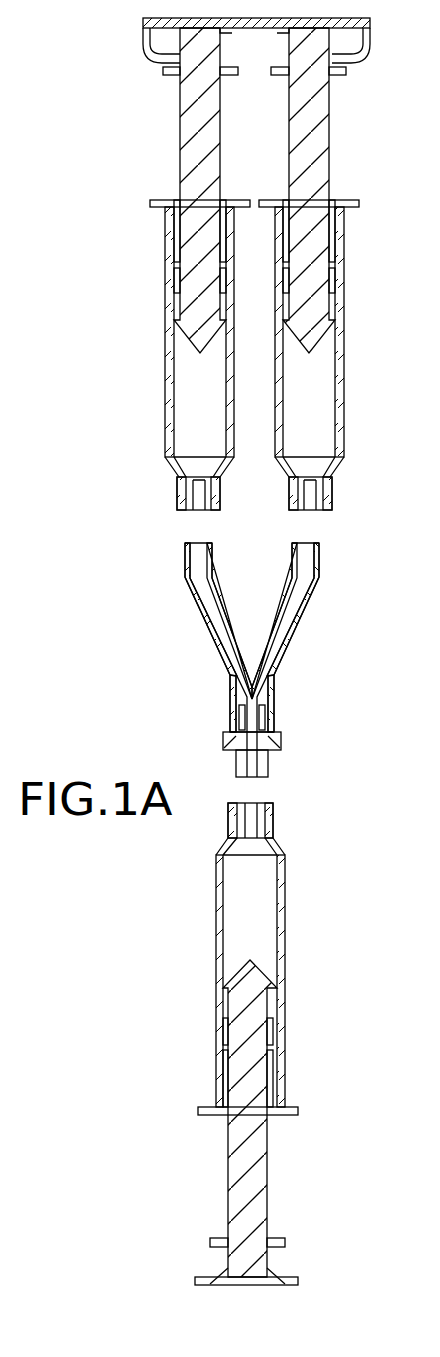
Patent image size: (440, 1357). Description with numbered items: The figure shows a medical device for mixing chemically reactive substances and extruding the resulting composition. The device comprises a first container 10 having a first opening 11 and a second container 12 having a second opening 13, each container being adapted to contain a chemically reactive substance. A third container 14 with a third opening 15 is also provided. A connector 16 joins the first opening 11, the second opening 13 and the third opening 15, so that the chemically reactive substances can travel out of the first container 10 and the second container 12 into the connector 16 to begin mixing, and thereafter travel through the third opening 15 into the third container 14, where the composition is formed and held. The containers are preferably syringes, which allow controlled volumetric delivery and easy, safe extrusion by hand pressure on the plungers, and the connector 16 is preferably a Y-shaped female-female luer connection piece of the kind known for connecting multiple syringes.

The first container 10 is at (165, 365).
The first opening 11 is at (198, 512).
The second container 12 is at (345, 368).
The second opening 13 is at (308, 512).
The third container 14 is at (215, 952).
The third opening 15 is at (250, 803).
The connector 16 is at (210, 633).